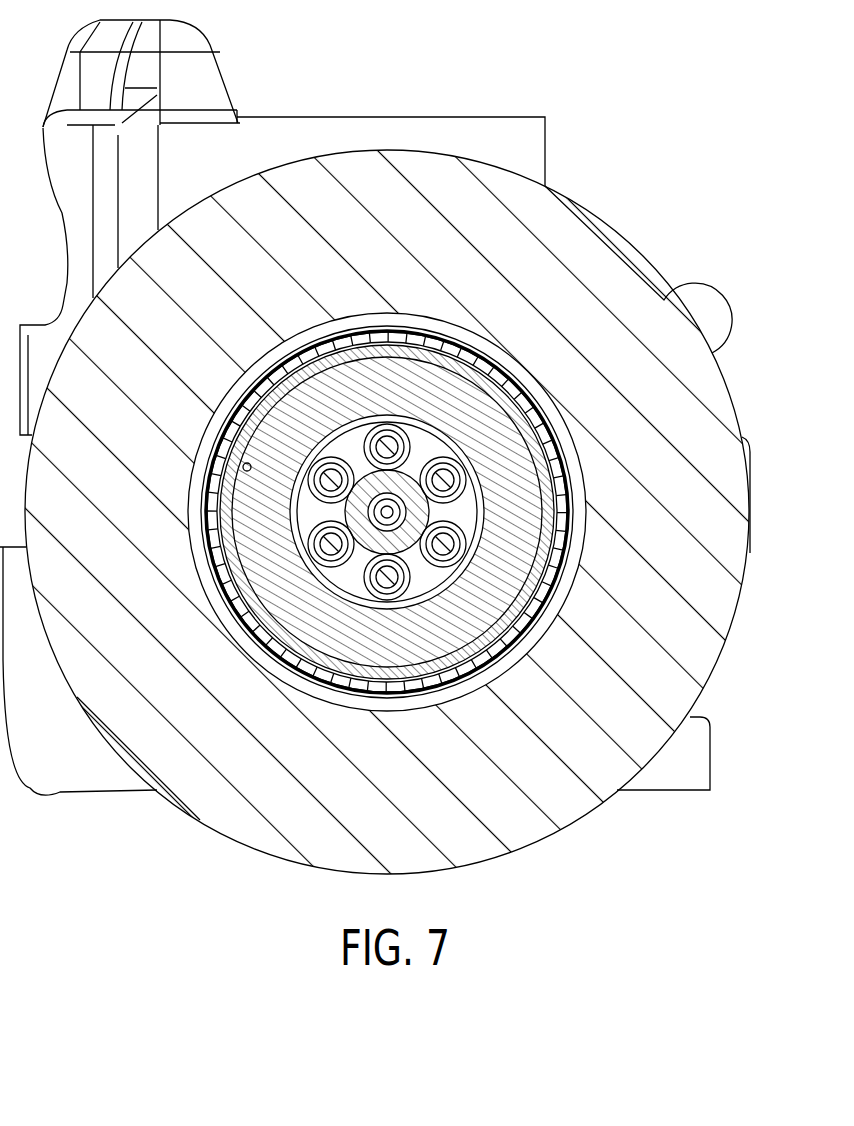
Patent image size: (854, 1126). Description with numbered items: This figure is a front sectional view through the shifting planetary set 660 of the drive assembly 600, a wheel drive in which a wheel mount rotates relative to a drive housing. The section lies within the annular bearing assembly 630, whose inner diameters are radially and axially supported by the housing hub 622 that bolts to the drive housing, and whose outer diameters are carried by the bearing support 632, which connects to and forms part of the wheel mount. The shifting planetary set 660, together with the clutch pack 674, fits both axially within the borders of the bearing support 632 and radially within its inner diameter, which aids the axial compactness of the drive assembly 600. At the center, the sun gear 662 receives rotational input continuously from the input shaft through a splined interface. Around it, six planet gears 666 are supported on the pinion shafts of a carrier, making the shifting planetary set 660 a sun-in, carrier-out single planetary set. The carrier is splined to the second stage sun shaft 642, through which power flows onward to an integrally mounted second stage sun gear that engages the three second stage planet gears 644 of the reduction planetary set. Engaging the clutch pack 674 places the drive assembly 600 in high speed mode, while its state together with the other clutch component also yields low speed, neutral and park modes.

The drive assembly 600 is at (624, 171).
The housing hub 622 is at (540, 537).
The bearing assembly 630 is at (455, 672).
The bearing support 632 is at (533, 827).
The second stage sun shaft 642 is at (405, 470).
The second stage planet gears 644 is at (391, 605).
The shifting planetary set 660 is at (517, 403).
The sun gear 662 is at (406, 511).
The planet gears 666 is at (340, 455).
The clutch pack 674 is at (472, 423).